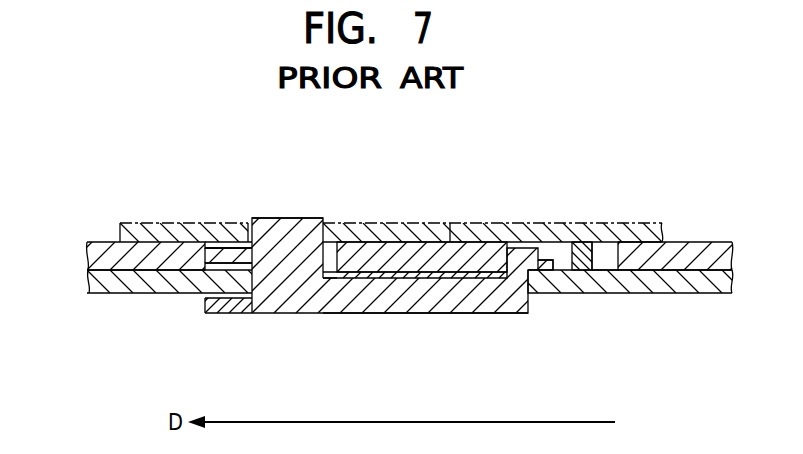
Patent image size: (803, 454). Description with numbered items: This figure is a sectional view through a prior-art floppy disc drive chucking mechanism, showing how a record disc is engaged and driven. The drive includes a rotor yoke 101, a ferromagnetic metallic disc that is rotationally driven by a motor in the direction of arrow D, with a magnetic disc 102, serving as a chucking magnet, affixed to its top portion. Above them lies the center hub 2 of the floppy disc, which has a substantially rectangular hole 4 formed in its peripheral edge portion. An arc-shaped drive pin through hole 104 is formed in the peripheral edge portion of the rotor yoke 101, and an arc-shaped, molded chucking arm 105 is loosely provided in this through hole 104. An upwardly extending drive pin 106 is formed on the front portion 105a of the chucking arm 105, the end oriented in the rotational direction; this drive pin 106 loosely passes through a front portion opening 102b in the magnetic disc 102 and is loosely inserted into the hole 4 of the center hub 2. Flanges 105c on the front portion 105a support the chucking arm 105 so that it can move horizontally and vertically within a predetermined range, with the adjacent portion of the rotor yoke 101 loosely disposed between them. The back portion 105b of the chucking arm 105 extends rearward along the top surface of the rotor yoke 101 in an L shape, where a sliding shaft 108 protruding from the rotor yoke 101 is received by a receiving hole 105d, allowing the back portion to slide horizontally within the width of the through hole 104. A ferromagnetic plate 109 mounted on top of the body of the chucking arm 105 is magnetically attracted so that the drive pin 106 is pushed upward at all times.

The center hub 2 is at (142, 223).
The rectangular hole 4 is at (404, 242).
The rotor yoke 101 is at (116, 287).
The magnetic disc 102 is at (102, 250).
The front portion opening 102b is at (200, 252).
The drive pin through hole 104 is at (244, 283).
The chucking arm 105 is at (355, 290).
The front portion 105a is at (288, 316).
The back portion 105b is at (580, 258).
The flanges 105c is at (240, 243).
The receiving hole 105d is at (548, 262).
The drive pin 106 is at (307, 218).
The sliding shaft 108 is at (556, 272).
The ferromagnetic plate 109 is at (436, 278).